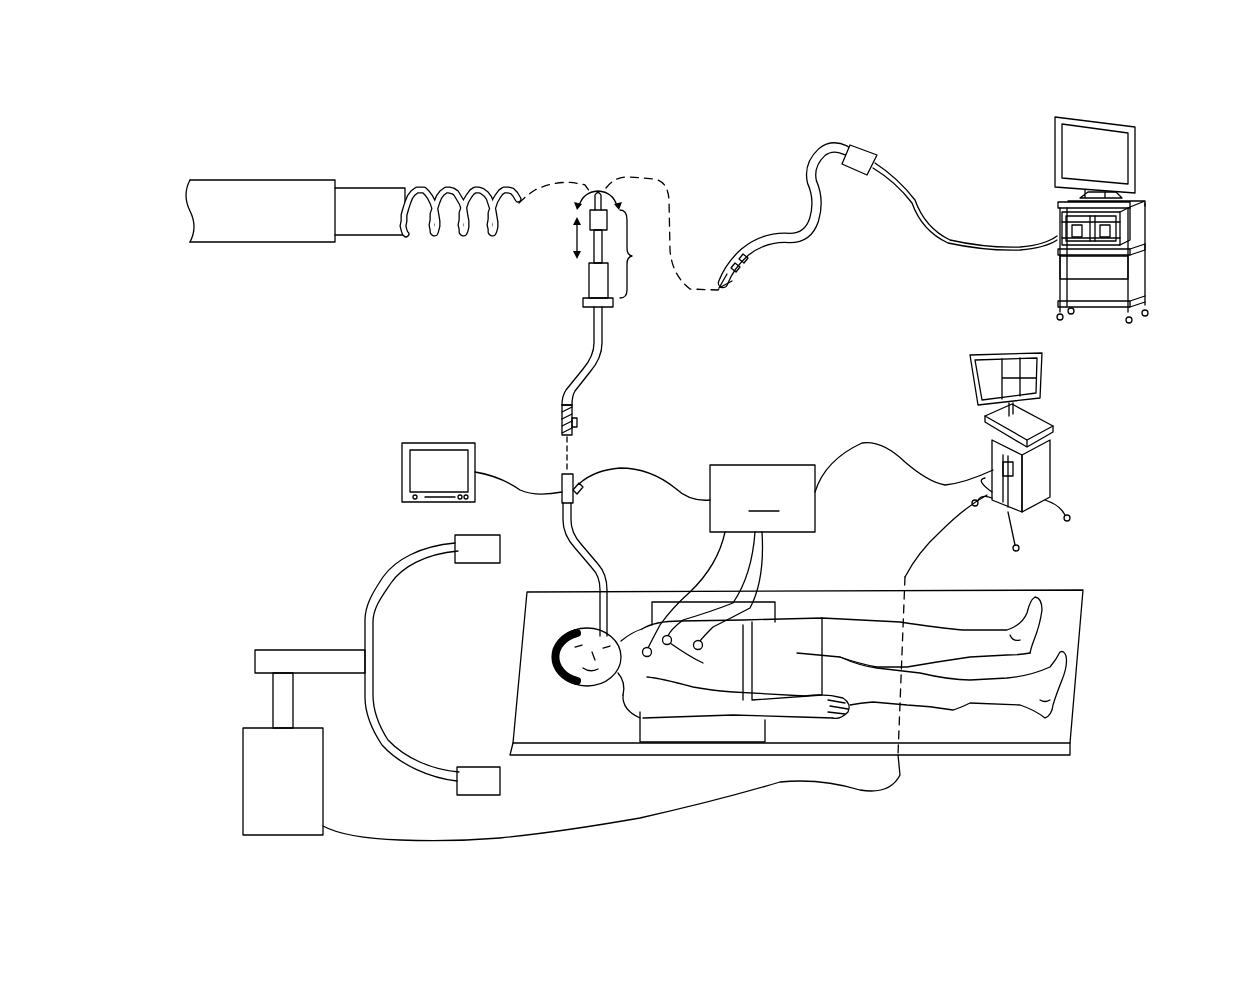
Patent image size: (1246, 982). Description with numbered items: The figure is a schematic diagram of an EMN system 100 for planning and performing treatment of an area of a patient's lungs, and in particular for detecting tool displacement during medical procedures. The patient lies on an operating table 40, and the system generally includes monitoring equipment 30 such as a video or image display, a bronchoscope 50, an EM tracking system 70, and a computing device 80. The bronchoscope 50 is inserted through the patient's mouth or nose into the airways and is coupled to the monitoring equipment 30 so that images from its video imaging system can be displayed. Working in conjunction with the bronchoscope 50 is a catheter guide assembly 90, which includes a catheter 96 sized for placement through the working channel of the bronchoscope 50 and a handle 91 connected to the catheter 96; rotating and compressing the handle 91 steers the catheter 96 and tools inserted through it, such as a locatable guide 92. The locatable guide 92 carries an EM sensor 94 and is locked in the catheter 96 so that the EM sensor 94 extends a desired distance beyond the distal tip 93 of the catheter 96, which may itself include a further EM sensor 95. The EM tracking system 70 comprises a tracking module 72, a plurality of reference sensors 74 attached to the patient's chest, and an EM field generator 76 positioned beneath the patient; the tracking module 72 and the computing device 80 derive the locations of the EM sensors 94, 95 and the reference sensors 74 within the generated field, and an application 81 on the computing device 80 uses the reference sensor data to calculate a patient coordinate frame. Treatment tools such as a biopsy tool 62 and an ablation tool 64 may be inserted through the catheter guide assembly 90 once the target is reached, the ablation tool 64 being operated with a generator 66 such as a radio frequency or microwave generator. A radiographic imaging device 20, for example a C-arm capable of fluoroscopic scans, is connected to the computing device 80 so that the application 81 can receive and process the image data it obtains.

The EMN system 100 is at (1010, 46).
The radiographic imaging device 20 is at (383, 592).
The monitoring equipment 30 is at (410, 505).
The operating table 40 is at (530, 705).
The bronchoscope 50 is at (574, 541).
The biopsy tool 62 is at (370, 188).
The ablation tool 64 is at (812, 236).
The generator 66 is at (1146, 230).
The EM tracking system 70 is at (875, 576).
The tracking module 72 is at (762, 498).
The reference sensors 74 is at (703, 608).
The EM field generator 76 is at (653, 732).
The computing device 80 is at (1052, 465).
The application 81 is at (1042, 385).
The catheter guide assembly 90 is at (592, 331).
The handle 91 is at (644, 254).
The locatable guide 92 is at (575, 400).
The distal tip 93 is at (562, 433).
The EM sensor 94 is at (578, 424).
The EM sensor 95 is at (562, 408).
The catheter 96 is at (605, 345).